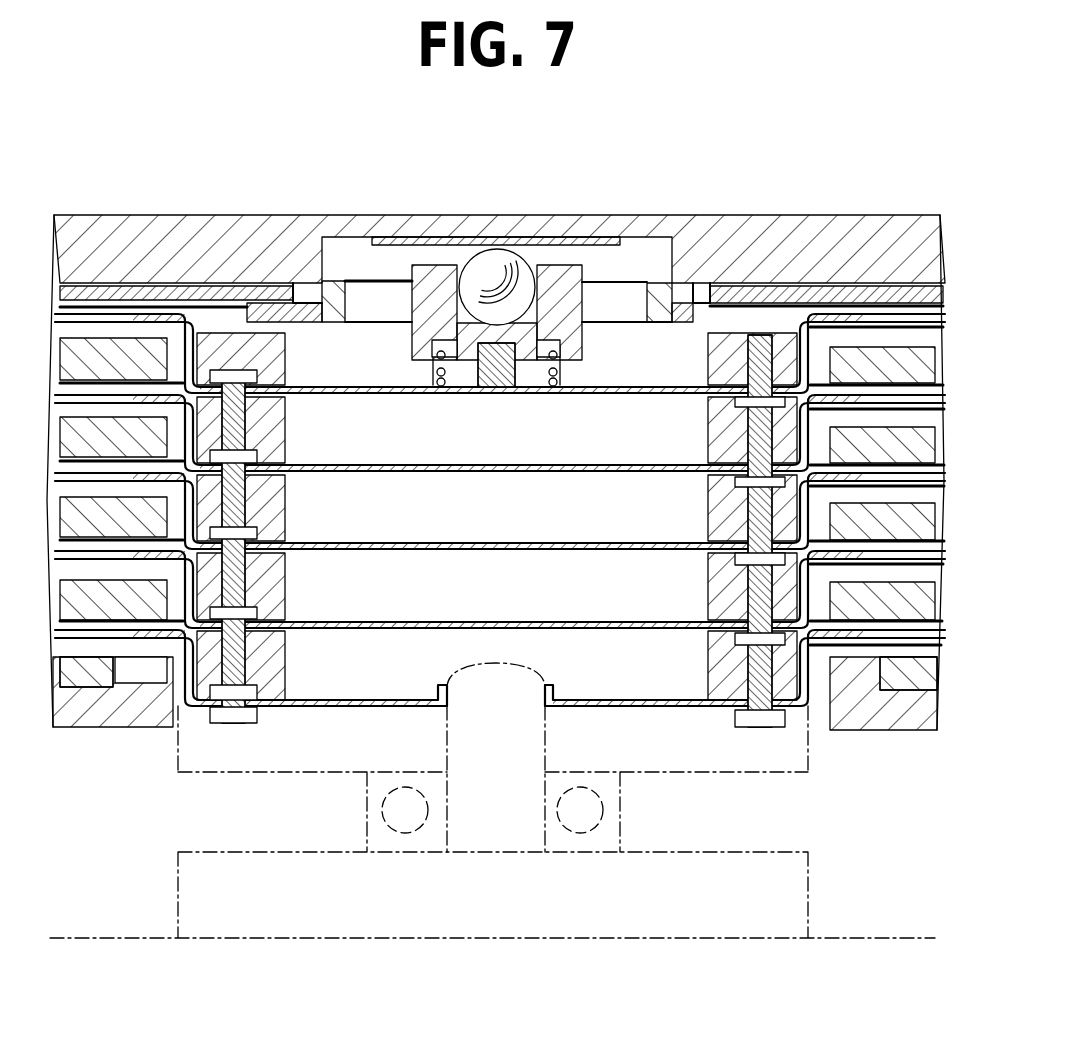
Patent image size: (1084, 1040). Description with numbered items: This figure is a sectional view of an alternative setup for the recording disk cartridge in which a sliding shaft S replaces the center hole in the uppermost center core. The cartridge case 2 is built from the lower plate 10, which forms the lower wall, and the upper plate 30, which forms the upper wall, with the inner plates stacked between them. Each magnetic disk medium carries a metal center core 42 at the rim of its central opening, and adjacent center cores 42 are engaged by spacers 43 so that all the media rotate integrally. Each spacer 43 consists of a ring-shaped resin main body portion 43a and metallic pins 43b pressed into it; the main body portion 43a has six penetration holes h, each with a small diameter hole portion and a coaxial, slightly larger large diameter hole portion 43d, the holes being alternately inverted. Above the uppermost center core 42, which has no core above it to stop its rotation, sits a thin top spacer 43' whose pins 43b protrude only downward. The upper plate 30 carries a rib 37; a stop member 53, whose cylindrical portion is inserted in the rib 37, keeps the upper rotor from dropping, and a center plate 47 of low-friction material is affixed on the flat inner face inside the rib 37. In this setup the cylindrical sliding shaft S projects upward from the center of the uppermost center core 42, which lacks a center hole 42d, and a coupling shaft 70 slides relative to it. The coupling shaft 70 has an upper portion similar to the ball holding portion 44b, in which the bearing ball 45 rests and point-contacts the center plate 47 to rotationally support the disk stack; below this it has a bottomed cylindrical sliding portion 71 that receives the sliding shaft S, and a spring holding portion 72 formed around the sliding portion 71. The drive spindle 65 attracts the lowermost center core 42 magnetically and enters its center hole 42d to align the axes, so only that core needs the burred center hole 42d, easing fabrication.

The cartridge case 2 is at (646, 104).
The lower plate 10 is at (74, 737).
The upper plate 30 is at (100, 216).
The rib 37 is at (306, 302).
The center core 42 is at (678, 783).
The center hole 42d is at (547, 690).
The spacer 43 is at (497, 665).
The main body portion 43a is at (287, 407).
The pin 43b is at (240, 431).
The top spacer 43' is at (497, 359).
The large diameter hole portion 43d is at (243, 385).
The penetration hole h is at (238, 708).
The ball holding portion 44b is at (427, 265).
The bearing ball 45 is at (496, 275).
The center plate 47 is at (605, 255).
The stop member 53 is at (811, 218).
The spindle 65 is at (812, 812).
The coupling shaft 70 is at (393, 303).
The sliding portion 71 is at (487, 393).
The spring holding portion 72 is at (590, 334).
The sliding shaft S is at (527, 393).